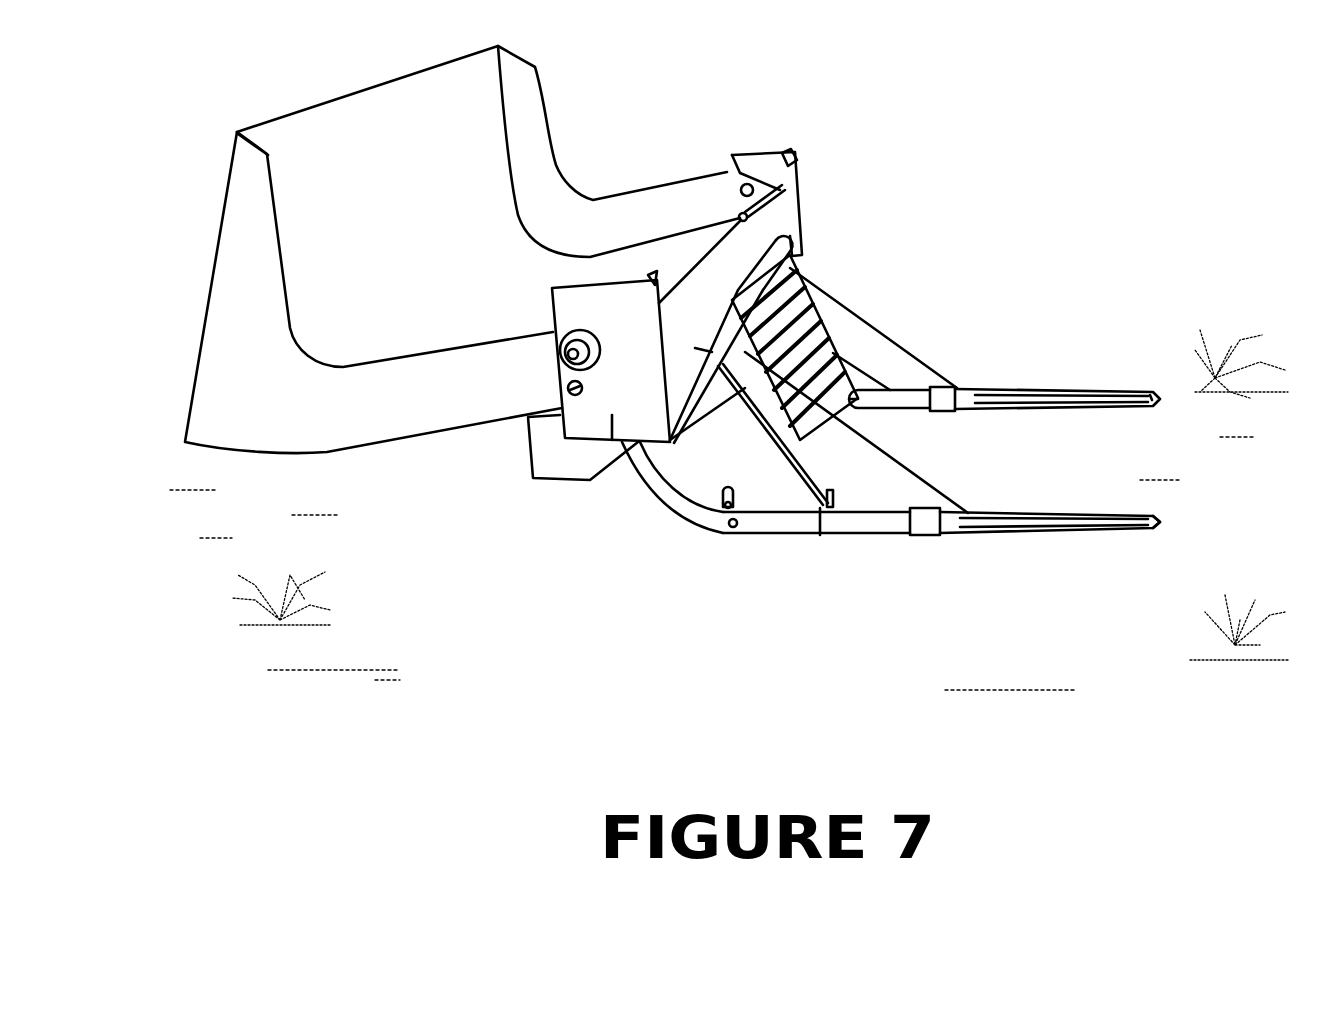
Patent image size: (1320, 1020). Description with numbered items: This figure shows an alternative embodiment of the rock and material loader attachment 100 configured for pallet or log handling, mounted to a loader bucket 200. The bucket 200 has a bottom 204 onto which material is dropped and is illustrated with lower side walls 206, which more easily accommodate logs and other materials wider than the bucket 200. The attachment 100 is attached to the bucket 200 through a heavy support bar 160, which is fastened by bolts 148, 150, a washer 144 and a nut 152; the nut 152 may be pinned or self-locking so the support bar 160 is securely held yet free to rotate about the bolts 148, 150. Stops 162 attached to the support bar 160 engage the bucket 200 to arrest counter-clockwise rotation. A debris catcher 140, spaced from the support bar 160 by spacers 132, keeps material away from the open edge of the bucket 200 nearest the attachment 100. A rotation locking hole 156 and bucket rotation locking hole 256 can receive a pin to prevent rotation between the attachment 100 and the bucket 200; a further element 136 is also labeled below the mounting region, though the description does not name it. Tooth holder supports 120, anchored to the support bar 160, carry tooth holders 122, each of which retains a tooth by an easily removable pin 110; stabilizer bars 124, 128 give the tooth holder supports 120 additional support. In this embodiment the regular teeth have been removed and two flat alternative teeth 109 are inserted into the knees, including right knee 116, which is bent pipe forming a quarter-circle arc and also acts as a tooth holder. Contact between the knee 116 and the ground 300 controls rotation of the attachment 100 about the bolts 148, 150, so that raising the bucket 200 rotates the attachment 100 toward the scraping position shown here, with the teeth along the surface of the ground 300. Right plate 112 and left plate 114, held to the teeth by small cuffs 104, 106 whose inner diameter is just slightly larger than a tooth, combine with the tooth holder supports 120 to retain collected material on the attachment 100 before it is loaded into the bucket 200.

The rock and material loader attachment 100 is at (1060, 160).
The cuff 104 is at (928, 525).
The cuff 106 is at (967, 388).
The alternative tooth 109 is at (1005, 527).
The removable pin 110 is at (735, 530).
The right plate 112 is at (837, 473).
The left plate 114 is at (903, 365).
The right knee 116 is at (762, 515).
The tooth holder support 120 is at (757, 470).
The tooth holder 122 is at (858, 422).
The stabilizer bar 124 is at (800, 307).
The stabilizer bar 128 is at (710, 410).
The spacer 132 is at (785, 238).
The mounting bracket 136 is at (582, 458).
The debris catcher 140 is at (770, 225).
The washer 144 is at (552, 405).
The bolt 148 is at (565, 368).
The bolt 150 is at (747, 196).
The nut 152 is at (568, 378).
The rotation locking hole 156 is at (574, 393).
The support bar 160 is at (612, 416).
The stop 162 is at (655, 283).
The bucket 200 is at (693, 68).
The bottom 204 is at (437, 297).
The lower side wall 206 is at (250, 318).
The bucket rotation locking hole 256 is at (782, 185).
The ground 300 is at (1218, 272).